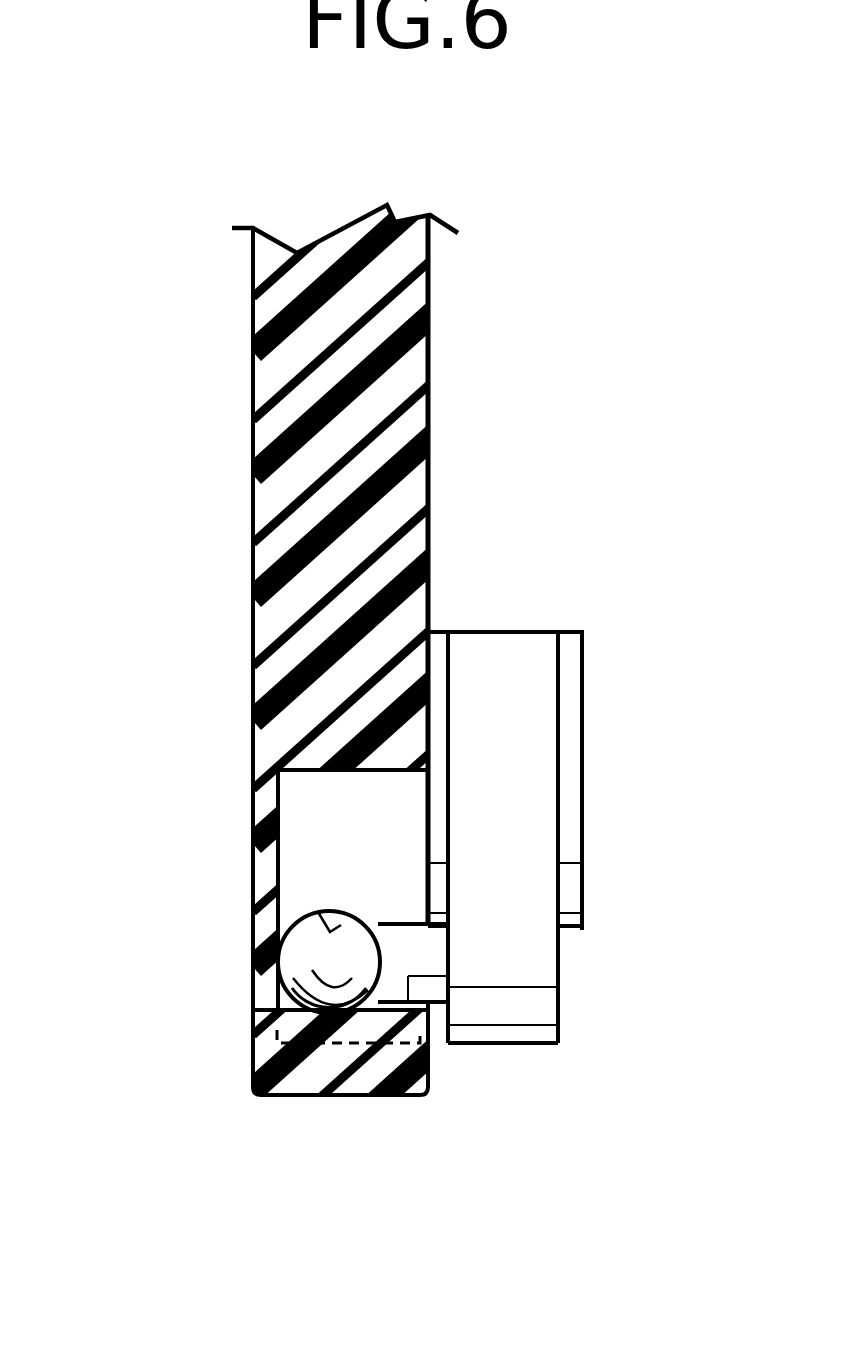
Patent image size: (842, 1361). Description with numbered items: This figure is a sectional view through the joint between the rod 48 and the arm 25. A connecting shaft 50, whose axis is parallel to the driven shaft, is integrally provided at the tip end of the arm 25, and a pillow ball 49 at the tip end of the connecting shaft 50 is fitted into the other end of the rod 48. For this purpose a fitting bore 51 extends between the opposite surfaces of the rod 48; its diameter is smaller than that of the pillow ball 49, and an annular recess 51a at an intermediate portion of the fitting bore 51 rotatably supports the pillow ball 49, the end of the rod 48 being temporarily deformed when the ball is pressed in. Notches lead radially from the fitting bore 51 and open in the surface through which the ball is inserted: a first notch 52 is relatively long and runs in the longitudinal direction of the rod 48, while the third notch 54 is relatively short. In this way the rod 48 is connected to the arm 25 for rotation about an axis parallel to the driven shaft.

The rod 48 is at (430, 453).
The pillow ball 49 is at (293, 958).
The connecting shaft 50 is at (415, 1097).
The fitting bore 51 is at (300, 921).
The annular recess 51a is at (341, 926).
The first notch 52 is at (400, 772).
The third notch 54 is at (327, 1045).
The arm 25 is at (540, 847).